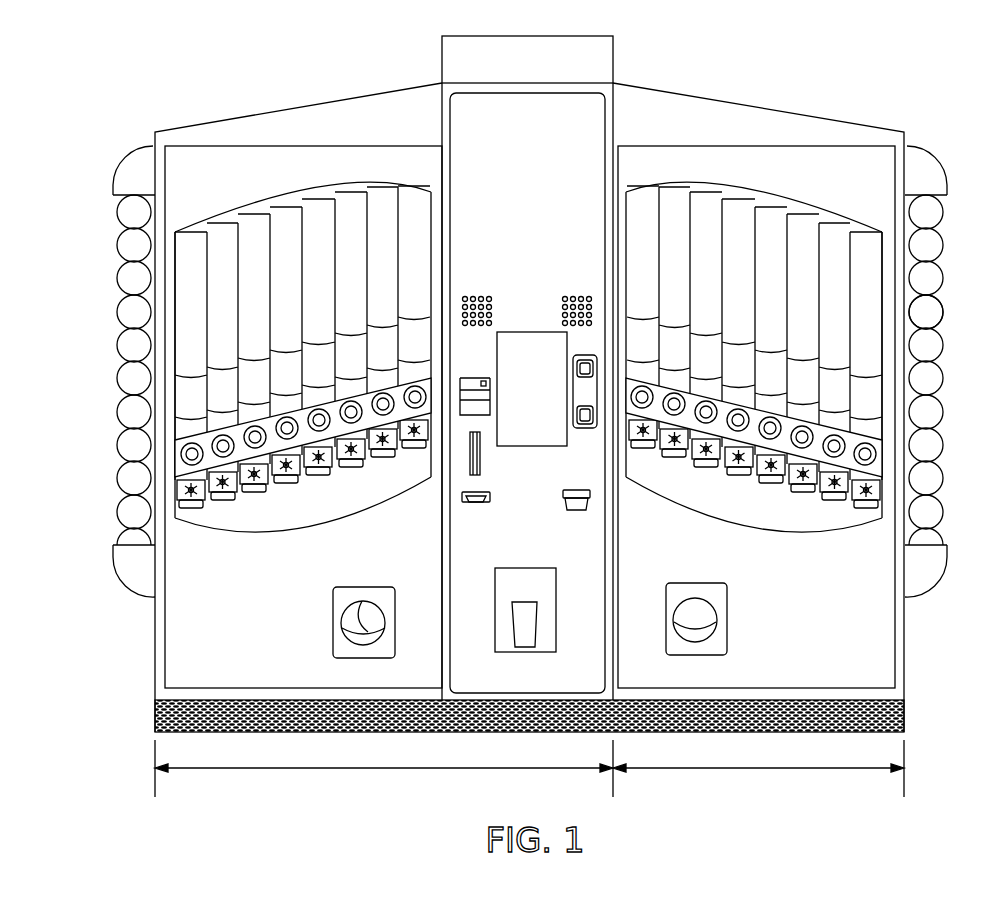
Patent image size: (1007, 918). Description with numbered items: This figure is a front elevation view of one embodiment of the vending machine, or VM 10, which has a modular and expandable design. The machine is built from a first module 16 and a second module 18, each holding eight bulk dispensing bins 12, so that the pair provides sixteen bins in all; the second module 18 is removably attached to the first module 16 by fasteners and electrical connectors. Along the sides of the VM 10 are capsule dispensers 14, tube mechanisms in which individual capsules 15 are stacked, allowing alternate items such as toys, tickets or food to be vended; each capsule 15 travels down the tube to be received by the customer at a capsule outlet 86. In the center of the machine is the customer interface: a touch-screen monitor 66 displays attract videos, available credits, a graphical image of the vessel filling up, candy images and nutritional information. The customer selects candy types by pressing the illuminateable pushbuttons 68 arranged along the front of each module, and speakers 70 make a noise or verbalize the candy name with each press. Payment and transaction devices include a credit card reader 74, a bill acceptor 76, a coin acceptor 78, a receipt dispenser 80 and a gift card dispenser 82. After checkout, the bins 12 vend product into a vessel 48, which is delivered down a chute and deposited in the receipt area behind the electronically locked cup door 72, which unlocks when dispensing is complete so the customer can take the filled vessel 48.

The vending machine 10 is at (176, 88).
The bulk dispensing bin 12 is at (187, 291).
The capsule dispenser 14 is at (113, 224).
The capsule 15 is at (928, 309).
The first module 16 is at (410, 770).
The second module 18 is at (762, 770).
The vessel 48 is at (523, 642).
The touch-screen monitor 66 is at (541, 332).
The illuminateable pushbutton 68 is at (184, 458).
The speaker 70 is at (481, 296).
The cup door 72 is at (545, 642).
The credit card reader 74 is at (482, 456).
The bill acceptor 76 is at (475, 385).
The coin acceptor 78 is at (590, 356).
The receipt dispenser 80 is at (574, 512).
The gift card dispenser 82 is at (472, 505).
The capsule outlet 86 is at (333, 632).